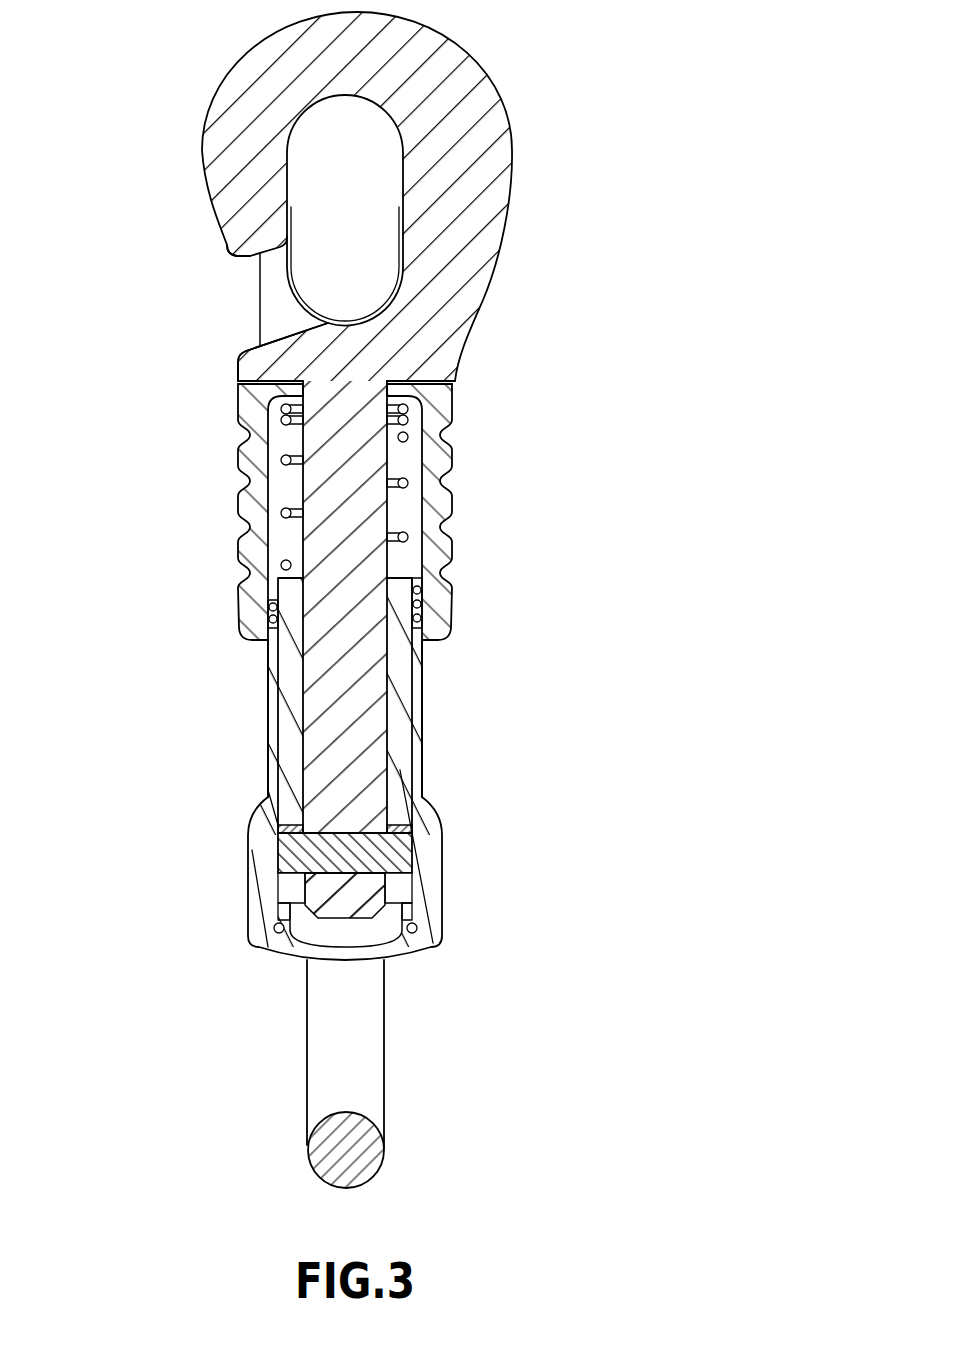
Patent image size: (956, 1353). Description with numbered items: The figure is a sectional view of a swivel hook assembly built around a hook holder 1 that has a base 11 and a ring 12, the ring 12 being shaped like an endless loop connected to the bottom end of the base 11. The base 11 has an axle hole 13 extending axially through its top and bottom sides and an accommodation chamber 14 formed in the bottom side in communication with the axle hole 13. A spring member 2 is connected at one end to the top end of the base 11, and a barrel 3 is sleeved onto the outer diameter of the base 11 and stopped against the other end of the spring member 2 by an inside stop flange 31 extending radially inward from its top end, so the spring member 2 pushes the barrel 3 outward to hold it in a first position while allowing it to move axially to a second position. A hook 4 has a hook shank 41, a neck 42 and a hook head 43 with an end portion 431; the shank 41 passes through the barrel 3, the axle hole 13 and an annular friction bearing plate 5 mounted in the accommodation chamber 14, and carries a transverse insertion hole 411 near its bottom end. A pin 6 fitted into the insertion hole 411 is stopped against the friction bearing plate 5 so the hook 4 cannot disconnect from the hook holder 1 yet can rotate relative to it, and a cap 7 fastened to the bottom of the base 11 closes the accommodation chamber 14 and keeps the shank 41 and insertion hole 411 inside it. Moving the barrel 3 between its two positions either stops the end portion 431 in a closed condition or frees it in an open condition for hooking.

The hook holder 1 is at (432, 741).
The base 11 is at (410, 702).
The ring 12 is at (358, 1152).
The axle hole 13 is at (393, 637).
The accommodation chamber 14 is at (282, 853).
The spring member 2 is at (403, 540).
The barrel 3 is at (447, 472).
The inside stop flange 31 is at (412, 392).
The hook 4 is at (512, 77).
The hook shank 41 is at (342, 788).
The insertion hole 411 is at (323, 877).
The neck 42 is at (250, 368).
The hook head 43 is at (455, 147).
The end portion 431 is at (245, 233).
The friction bearing plate 5 is at (410, 829).
The pin 6 is at (310, 850).
The cap 7 is at (397, 960).